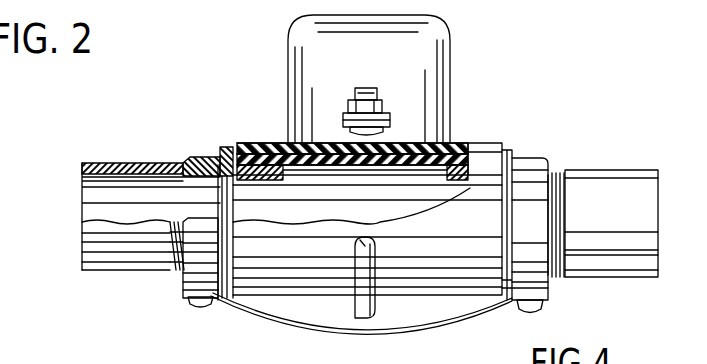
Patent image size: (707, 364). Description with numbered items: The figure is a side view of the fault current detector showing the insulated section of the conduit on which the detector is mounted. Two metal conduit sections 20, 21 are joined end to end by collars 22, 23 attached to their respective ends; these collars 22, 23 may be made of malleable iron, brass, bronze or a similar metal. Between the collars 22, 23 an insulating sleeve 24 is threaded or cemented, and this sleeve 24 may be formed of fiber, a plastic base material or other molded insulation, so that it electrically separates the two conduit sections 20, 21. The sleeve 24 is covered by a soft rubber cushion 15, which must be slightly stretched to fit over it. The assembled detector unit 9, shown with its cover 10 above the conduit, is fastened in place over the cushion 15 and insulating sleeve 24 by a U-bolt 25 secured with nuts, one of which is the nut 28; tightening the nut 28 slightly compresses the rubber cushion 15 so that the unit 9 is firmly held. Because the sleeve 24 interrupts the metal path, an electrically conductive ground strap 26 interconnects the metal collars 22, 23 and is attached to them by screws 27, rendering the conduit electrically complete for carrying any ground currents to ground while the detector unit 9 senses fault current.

The detector unit 9 is at (274, 23).
The cover 10 is at (449, 62).
The soft rubber cushion 15 is at (462, 145).
The conduit section 20 is at (131, 164).
The conduit section 21 is at (597, 175).
The collar 22 is at (200, 158).
The collar 23 is at (521, 161).
The insulating sleeve 24 is at (282, 143).
The U-bolt 25 is at (376, 312).
The ground strap 26 is at (330, 333).
The screws 27 is at (201, 308).
The nut 28 is at (380, 110).